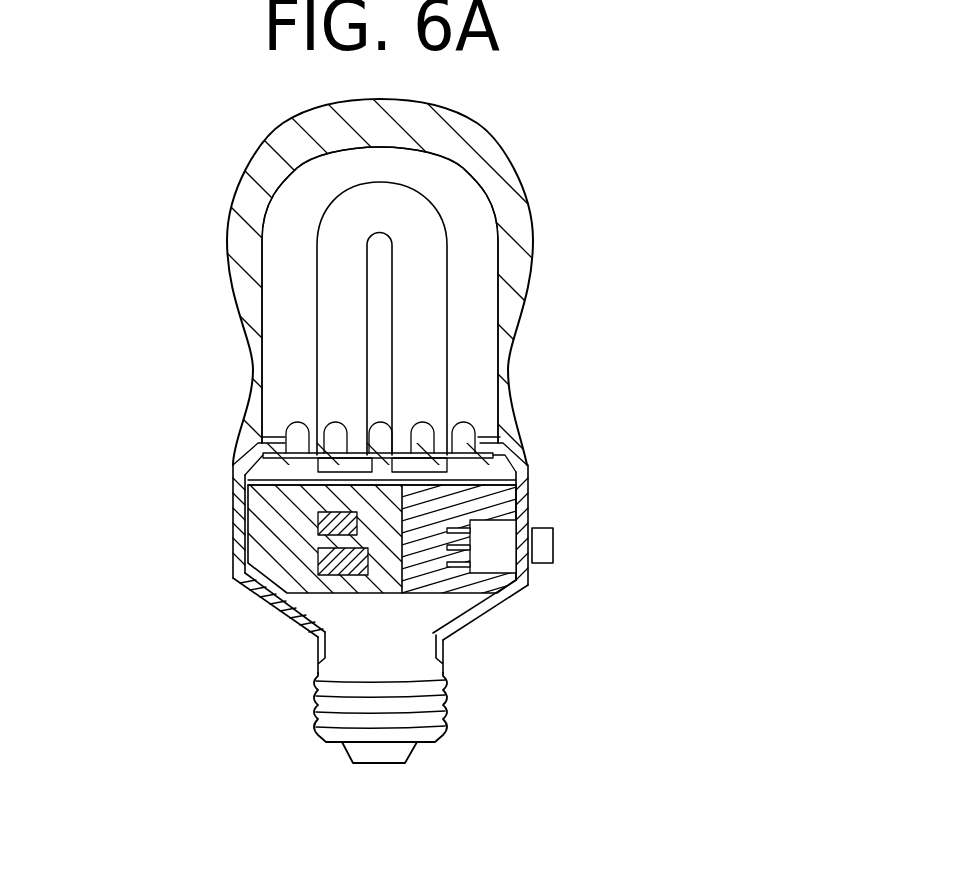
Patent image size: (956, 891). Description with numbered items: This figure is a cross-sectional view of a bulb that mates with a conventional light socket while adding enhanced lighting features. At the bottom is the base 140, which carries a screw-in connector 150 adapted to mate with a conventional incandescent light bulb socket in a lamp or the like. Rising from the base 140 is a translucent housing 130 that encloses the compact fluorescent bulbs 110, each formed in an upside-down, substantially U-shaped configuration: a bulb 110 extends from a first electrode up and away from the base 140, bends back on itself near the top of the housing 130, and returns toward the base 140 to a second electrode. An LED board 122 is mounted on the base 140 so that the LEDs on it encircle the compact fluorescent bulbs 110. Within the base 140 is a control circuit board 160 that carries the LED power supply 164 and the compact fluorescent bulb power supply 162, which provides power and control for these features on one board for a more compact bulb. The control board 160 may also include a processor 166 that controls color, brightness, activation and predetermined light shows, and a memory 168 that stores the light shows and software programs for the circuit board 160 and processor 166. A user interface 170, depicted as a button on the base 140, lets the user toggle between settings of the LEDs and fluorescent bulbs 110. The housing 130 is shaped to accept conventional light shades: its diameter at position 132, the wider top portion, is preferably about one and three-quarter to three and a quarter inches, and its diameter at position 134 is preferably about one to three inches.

The compact fluorescent bulb 110 is at (428, 290).
The LED board 122 is at (250, 497).
The translucent housing 130 is at (508, 162).
The position 132 is at (211, 223).
The position 134 is at (520, 345).
The base 140 is at (233, 522).
The screw-in connector 150 is at (443, 705).
The control circuit board 160 is at (377, 596).
The compact fluorescent bulb power supply 162 is at (270, 565).
The LED power supply 164 is at (495, 500).
The processor 166 is at (282, 594).
The memory 168 is at (320, 520).
The user interface 170 is at (547, 545).